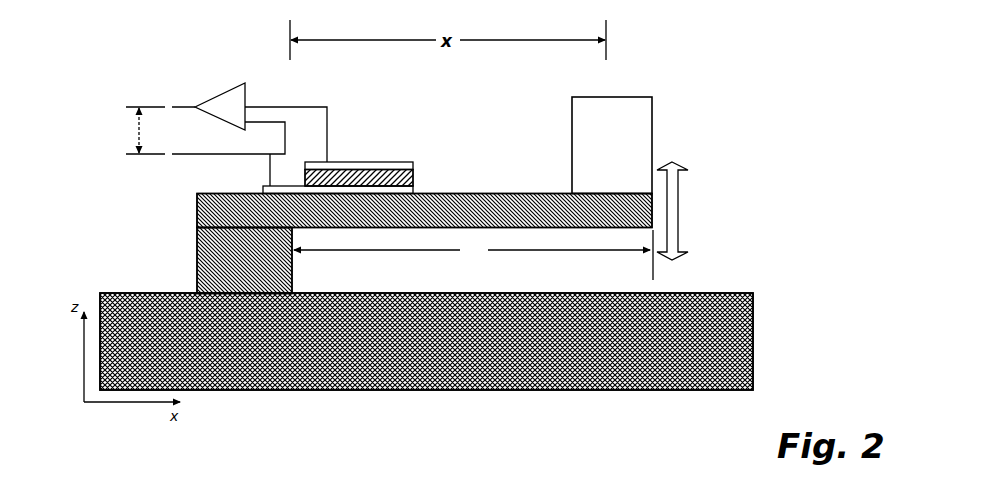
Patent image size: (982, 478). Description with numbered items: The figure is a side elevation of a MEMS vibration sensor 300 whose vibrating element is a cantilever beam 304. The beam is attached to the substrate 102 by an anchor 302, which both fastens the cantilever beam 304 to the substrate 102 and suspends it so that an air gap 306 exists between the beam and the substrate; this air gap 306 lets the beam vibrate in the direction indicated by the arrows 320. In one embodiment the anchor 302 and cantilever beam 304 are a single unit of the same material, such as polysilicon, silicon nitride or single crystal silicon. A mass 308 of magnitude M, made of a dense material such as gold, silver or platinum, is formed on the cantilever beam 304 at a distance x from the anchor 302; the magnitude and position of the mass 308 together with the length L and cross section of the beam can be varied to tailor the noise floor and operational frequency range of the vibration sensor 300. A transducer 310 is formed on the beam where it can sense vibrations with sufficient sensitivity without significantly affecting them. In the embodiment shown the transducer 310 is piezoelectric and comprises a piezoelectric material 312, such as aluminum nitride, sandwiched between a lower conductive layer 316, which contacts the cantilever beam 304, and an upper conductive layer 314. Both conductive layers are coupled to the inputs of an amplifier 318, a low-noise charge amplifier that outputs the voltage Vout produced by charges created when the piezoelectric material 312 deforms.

The substrate 102 is at (426, 341).
The vibration sensor 300 is at (722, 100).
The anchor 302 is at (244, 261).
The cantilever beam 304 is at (424, 211).
The air gap 306 is at (473, 256).
The mass 308 is at (612, 145).
The transducer 310 is at (387, 134).
The piezoelectric material 312 is at (407, 169).
The upper conductive layer 314 is at (371, 162).
The lower conductive layer 316 is at (415, 193).
The amplifier 318 is at (222, 93).
The arrows 320 is at (670, 210).